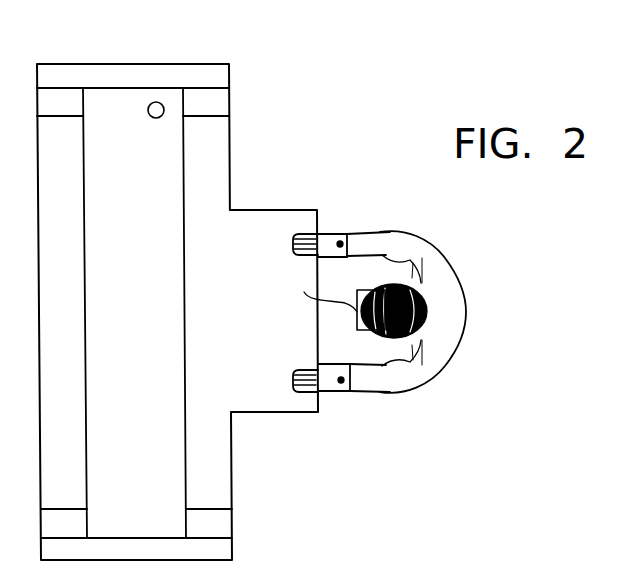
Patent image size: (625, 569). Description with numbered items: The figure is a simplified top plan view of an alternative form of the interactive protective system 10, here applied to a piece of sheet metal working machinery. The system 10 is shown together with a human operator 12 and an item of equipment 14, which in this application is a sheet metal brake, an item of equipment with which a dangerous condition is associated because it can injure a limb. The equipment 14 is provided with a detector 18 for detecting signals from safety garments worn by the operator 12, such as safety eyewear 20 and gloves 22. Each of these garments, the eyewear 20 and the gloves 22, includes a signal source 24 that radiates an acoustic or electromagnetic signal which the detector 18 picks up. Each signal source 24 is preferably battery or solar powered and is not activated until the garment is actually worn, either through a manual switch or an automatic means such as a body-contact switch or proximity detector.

The interactive protective system 10 is at (324, 97).
The human operator 12 is at (455, 311).
The equipment 14 is at (148, 320).
The detector 18 is at (160, 107).
The safety eyewear 20 is at (361, 331).
The gloves 22 is at (328, 388).
The signal source 24 is at (340, 247).